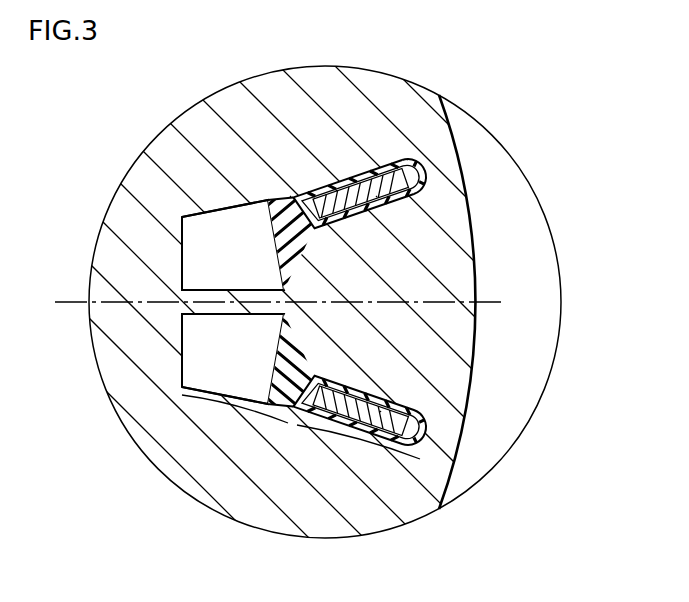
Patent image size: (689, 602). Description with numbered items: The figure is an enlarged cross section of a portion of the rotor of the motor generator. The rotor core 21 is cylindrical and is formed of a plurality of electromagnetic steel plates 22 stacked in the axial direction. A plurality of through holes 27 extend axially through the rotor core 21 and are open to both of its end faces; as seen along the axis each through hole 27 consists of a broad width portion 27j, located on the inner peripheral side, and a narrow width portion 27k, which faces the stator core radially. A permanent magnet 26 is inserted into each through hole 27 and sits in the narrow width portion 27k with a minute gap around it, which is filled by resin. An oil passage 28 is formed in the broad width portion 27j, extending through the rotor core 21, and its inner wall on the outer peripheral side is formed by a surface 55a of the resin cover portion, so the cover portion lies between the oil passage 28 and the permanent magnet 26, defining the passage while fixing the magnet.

The rotor core 21 is at (468, 191).
The electromagnetic steel plate 22 is at (450, 228).
The permanent magnet 26 is at (360, 194).
The through hole 27 is at (394, 312).
The broad width portion 27j is at (235, 414).
The narrow width portion 27k is at (357, 445).
The oil passage 28 is at (225, 255).
The surface of cover portion 55a is at (272, 225).